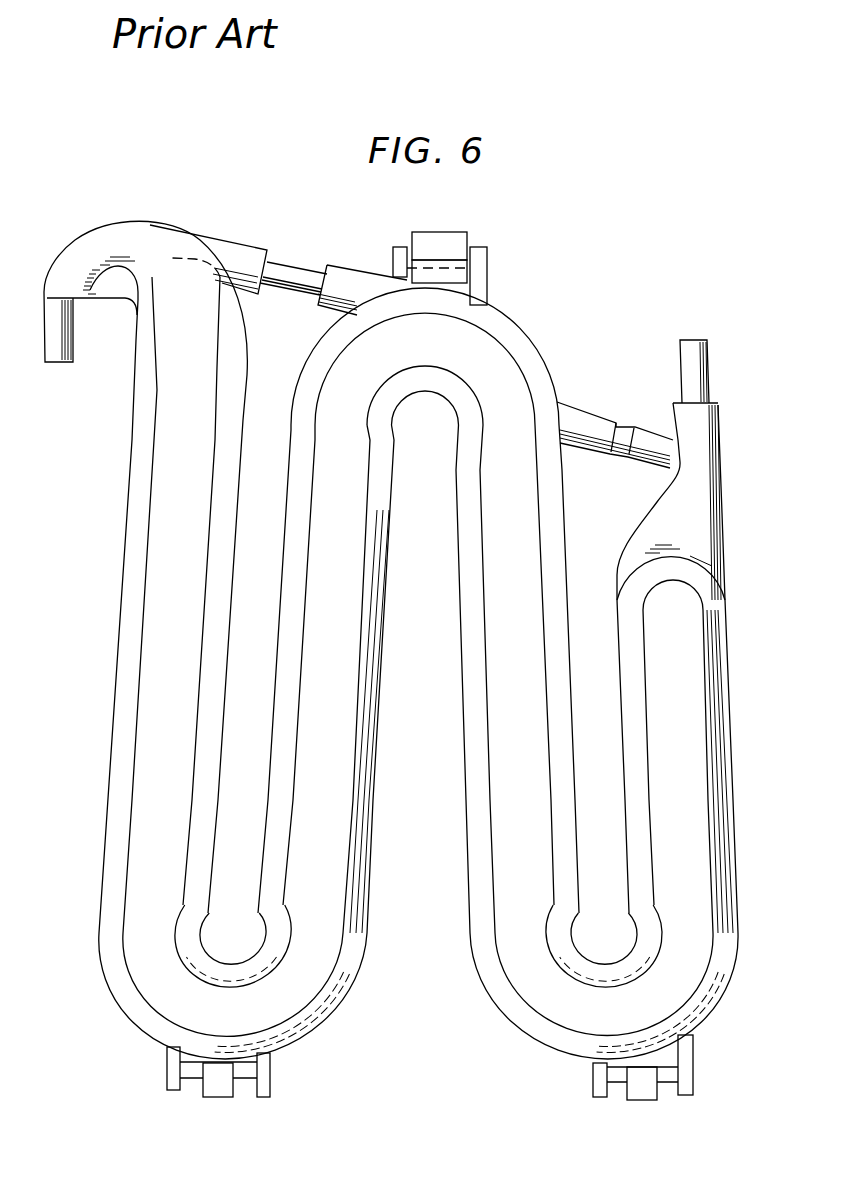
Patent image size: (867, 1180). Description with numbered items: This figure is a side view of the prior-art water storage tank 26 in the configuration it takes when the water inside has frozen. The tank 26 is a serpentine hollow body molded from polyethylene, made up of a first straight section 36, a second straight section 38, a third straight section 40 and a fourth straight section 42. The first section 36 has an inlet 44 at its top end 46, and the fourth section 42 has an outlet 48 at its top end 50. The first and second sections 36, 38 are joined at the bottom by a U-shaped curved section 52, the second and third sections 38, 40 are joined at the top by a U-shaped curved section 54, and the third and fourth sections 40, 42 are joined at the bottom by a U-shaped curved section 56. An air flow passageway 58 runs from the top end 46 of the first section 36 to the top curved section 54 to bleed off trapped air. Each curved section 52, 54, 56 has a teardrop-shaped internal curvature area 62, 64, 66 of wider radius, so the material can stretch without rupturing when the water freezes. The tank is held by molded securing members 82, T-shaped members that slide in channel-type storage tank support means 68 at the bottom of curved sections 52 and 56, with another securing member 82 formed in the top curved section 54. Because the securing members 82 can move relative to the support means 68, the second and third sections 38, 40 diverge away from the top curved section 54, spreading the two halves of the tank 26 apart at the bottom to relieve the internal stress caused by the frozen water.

The water storage tank 26 is at (402, 670).
The first straight section 36 is at (677, 663).
The second straight section 38 is at (505, 690).
The third straight section 40 is at (352, 597).
The fourth straight section 42 is at (157, 612).
The inlet 44 is at (689, 347).
The top end 46 is at (697, 473).
The outlet 48 is at (56, 349).
The top end 50 is at (114, 242).
The U-shaped curved section 52 is at (553, 998).
The U-shaped curved section 54 is at (478, 353).
The U-shaped curved section 56 is at (173, 997).
The air flow passageway 58 is at (583, 425).
The internal curvature area 62 is at (577, 943).
The internal curvature area 64 is at (397, 413).
The internal curvature area 66 is at (203, 932).
The storage tank support means 68 is at (213, 1090).
The securing member 82 is at (492, 265).